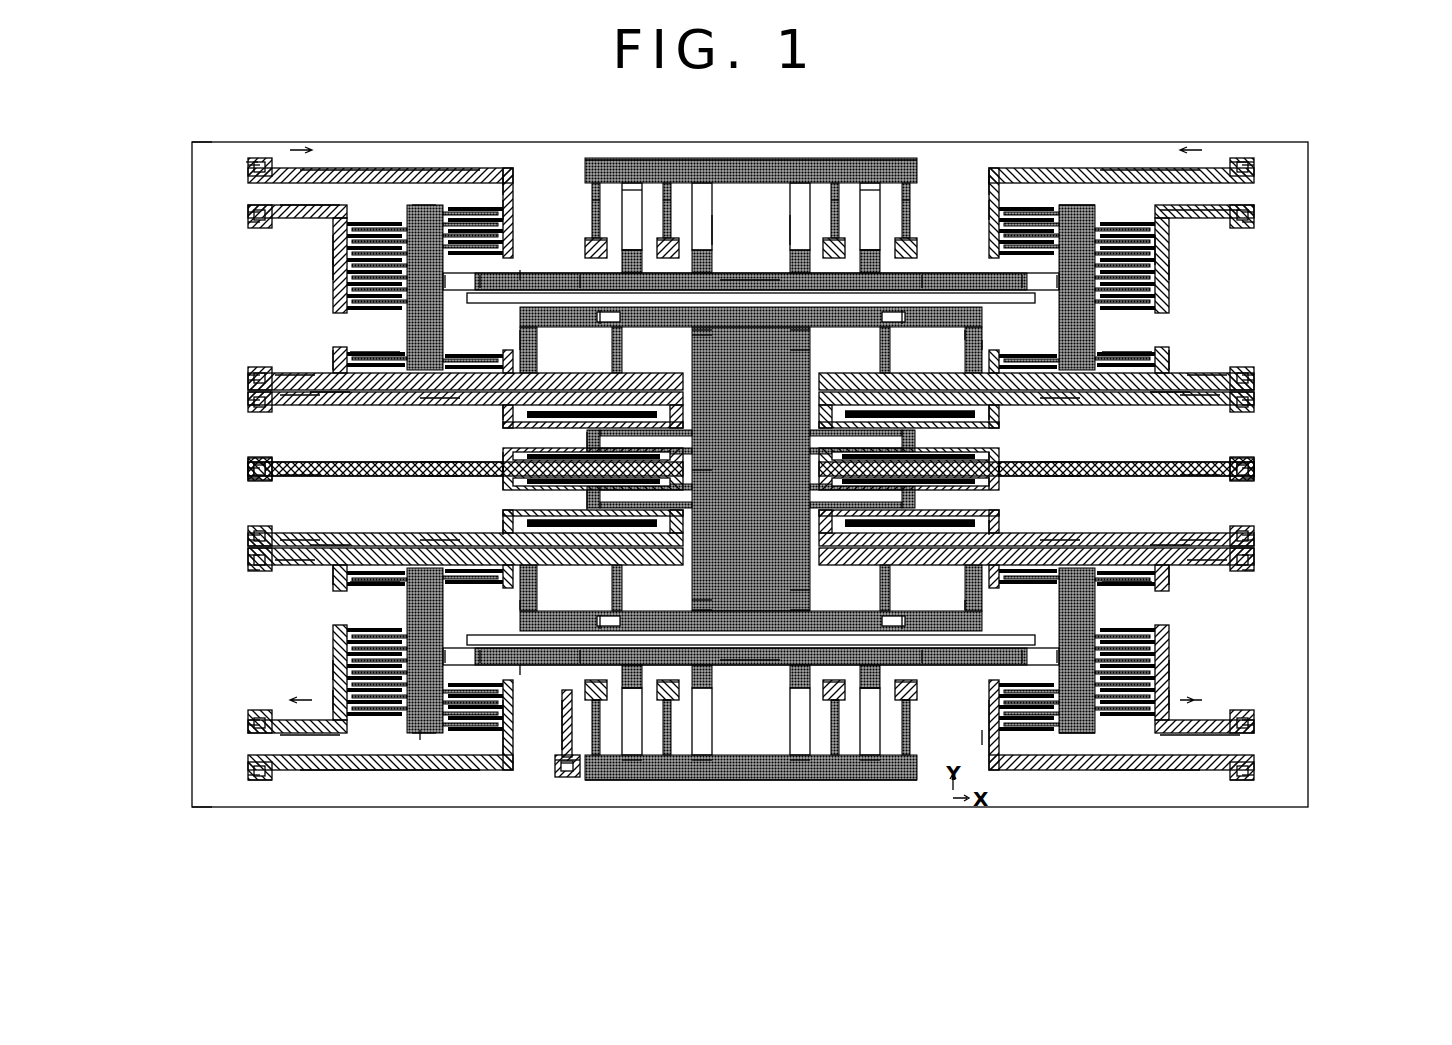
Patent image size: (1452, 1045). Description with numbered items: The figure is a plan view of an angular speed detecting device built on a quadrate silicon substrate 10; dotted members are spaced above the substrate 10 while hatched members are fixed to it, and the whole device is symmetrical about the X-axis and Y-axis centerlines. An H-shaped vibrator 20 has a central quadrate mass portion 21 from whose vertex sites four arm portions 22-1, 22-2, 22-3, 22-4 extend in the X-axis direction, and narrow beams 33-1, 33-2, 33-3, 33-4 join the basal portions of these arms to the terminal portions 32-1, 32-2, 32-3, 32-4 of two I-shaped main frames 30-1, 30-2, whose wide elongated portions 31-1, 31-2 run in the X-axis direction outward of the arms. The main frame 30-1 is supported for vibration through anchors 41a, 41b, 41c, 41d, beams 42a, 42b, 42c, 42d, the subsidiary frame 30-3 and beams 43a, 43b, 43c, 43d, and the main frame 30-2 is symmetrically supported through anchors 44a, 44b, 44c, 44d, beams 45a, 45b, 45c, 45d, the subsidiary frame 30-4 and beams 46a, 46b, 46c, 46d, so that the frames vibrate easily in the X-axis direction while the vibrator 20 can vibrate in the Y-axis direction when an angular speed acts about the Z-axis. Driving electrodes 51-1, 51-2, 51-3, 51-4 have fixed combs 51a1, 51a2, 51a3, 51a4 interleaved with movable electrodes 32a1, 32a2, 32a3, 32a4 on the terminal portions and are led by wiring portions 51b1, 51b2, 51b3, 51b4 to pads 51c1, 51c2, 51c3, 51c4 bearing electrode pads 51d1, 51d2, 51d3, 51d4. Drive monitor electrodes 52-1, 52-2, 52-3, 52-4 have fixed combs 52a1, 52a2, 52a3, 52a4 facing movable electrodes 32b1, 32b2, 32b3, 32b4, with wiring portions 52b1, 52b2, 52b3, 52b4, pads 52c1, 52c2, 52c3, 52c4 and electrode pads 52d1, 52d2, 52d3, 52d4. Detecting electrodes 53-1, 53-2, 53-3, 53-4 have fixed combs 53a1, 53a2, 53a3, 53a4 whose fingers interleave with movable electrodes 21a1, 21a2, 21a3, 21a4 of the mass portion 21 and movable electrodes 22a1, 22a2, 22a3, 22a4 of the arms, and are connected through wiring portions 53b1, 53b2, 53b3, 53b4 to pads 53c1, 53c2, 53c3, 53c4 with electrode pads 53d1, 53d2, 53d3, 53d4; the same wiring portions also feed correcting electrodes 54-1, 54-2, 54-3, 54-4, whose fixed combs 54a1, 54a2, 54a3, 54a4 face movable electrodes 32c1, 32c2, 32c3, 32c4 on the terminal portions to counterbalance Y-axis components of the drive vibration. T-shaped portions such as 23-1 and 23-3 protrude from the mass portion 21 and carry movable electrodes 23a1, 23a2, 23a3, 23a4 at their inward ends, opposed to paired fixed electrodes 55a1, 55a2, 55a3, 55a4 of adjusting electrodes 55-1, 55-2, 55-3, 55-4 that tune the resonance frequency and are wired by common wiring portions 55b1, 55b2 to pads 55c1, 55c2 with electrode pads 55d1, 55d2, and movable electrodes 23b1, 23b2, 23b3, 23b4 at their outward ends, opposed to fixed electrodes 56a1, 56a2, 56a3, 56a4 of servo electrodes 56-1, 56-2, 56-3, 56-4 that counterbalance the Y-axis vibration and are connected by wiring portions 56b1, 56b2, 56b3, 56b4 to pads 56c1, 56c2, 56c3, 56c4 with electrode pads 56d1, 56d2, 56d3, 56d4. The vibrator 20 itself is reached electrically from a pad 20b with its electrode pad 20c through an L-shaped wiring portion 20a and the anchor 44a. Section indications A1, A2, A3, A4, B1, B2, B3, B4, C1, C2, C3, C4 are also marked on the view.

The substrate 10 is at (450, 805).
The vibrator 20 is at (777, 480).
The L-shaped wiring portion 20a is at (575, 770).
The pad 20b is at (560, 775).
The electrode pad 20c is at (568, 778).
The mass portion 21 is at (700, 466).
The comb-like movable electrode 21a1 is at (712, 338).
The comb-like movable electrode 21a2 is at (812, 352).
The comb-like movable electrode 21a3 is at (712, 598).
The comb-like movable electrode 21a4 is at (810, 592).
The arm portion 22-1 is at (515, 298).
The arm portion 22-2 is at (985, 298).
The arm portion 22-3 is at (560, 650).
The arm portion 22-4 is at (938, 650).
The comb-like movable electrode 22a1 is at (603, 298).
The comb-like movable electrode 22a2 is at (905, 298).
The comb-like movable electrode 22a3 is at (623, 650).
The comb-like movable electrode 22a4 is at (880, 650).
The T-shaped portion 23-1 is at (585, 440).
The T-shaped portion 23-3 is at (585, 500).
The paired movable electrode 23a1 is at (660, 456).
The paired movable electrode 23a2 is at (845, 415).
The paired movable electrode 23a3 is at (660, 484).
The paired movable electrode 23a4 is at (845, 484).
The paired movable electrode 23b1 is at (660, 415).
The paired movable electrode 23b2 is at (845, 412).
The paired movable electrode 23b3 is at (660, 524).
The paired movable electrode 23b4 is at (845, 524).
The main frame 30-1 is at (521, 272).
The main frame 30-2 is at (521, 668).
The subsidiary frame 30-3 is at (755, 160).
The subsidiary frame 30-4 is at (757, 782).
The elongated portion 31-1 is at (742, 280).
The elongated portion 31-2 is at (742, 662).
The terminal portion 32-1 is at (520, 342).
The terminal portion 32-2 is at (982, 342).
The terminal portion 32-3 is at (435, 742).
The terminal portion 32-4 is at (983, 742).
The comb-like movable electrode 32a1 is at (420, 205).
The comb-like movable electrode 32a2 is at (1078, 205).
The comb-like movable electrode 32a3 is at (420, 735).
The comb-like movable electrode 32a4 is at (1080, 735).
The comb-like movable electrode 32b1 is at (506, 170).
The comb-like movable electrode 32b2 is at (996, 170).
The comb-like movable electrode 32b3 is at (506, 742).
The comb-like movable electrode 32b4 is at (996, 742).
The comb-like movable electrode 32c1 is at (330, 405).
The comb-like movable electrode 32c2 is at (1170, 405).
The comb-like movable electrode 32c3 is at (332, 545).
The comb-like movable electrode 32c4 is at (1170, 545).
The beam 33-1 is at (462, 298).
The beam 33-2 is at (1048, 298).
The beam 33-3 is at (505, 650).
The beam 33-4 is at (993, 650).
The anchor 41a is at (596, 200).
The anchor 41b is at (666, 200).
The anchor 41c is at (835, 200).
The anchor 41d is at (906, 200).
The beam 42a is at (592, 240).
The beam 42b is at (666, 240).
The beam 42c is at (838, 240).
The beam 42d is at (908, 240).
The beam 43a is at (630, 190).
The beam 43b is at (712, 232).
The beam 43c is at (790, 215).
The beam 43d is at (870, 190).
The anchor 44a is at (598, 705).
The anchor 44b is at (668, 705).
The anchor 44c is at (836, 705).
The anchor 44d is at (906, 705).
The beam 45a is at (596, 700).
The beam 45b is at (668, 700).
The beam 45c is at (836, 700).
The beam 45d is at (908, 700).
The beam 46a is at (632, 768).
The beam 46b is at (705, 768).
The beam 46c is at (800, 768).
The beam 46d is at (870, 768).
The driving electrode 51-1 is at (330, 270).
The driving electrode 51-2 is at (1175, 270).
The driving electrode 51-3 is at (330, 670).
The driving electrode 51-4 is at (1175, 670).
The comb-like fixed electrode 51a1 is at (335, 205).
The comb-like fixed electrode 51a2 is at (1200, 210).
The comb-like fixed electrode 51a3 is at (300, 737).
The comb-like fixed electrode 51a4 is at (1200, 737).
The wiring portion 51b1 is at (333, 250).
The wiring portion 51b2 is at (1170, 240).
The wiring portion 51b3 is at (333, 700).
The wiring portion 51b4 is at (1170, 700).
The pad 51c1 is at (255, 228).
The pad 51c2 is at (1254, 225).
The pad 51c3 is at (255, 720).
The pad 51c4 is at (1254, 720).
The electrode pad 51d1 is at (248, 212).
The electrode pad 51d2 is at (1254, 212).
The electrode pad 51d3 is at (248, 726).
The electrode pad 51d4 is at (1254, 726).
The drive monitor electrode 52-1 is at (518, 210).
The drive monitor electrode 52-2 is at (984, 210).
The drive monitor electrode 52-3 is at (520, 742).
The drive monitor electrode 52-4 is at (986, 730).
The comb-like fixed electrode 52a1 is at (507, 175).
The comb-like fixed electrode 52a2 is at (995, 175).
The comb-like fixed electrode 52a3 is at (506, 700).
The comb-like fixed electrode 52a4 is at (995, 705).
The wiring portion 52b1 is at (385, 170).
The wiring portion 52b2 is at (1150, 170).
The wiring portion 52b3 is at (380, 772).
The wiring portion 52b4 is at (1120, 772).
The pad 52c1 is at (252, 162).
The pad 52c2 is at (1245, 162).
The pad 52c3 is at (256, 782).
The pad 52c4 is at (1245, 782).
The electrode pad 52d1 is at (248, 165).
The electrode pad 52d2 is at (1254, 165).
The electrode pad 52d3 is at (248, 775).
The electrode pad 52d4 is at (1254, 775).
The detecting electrode 53-1 is at (605, 345).
The detecting electrode 53-2 is at (895, 345).
The detecting electrode 53-3 is at (605, 600).
The detecting electrode 53-4 is at (895, 600).
The comb-like fixed electrode 53a1 is at (700, 340).
The comb-like fixed electrode 53a2 is at (800, 340).
The comb-like fixed electrode 53a3 is at (703, 612).
The comb-like fixed electrode 53a4 is at (790, 612).
The wiring portion 53b1 is at (290, 375).
The wiring portion 53b2 is at (1215, 375).
The wiring portion 53b3 is at (290, 565).
The wiring portion 53b4 is at (1215, 565).
The pad 53c1 is at (255, 370).
The pad 53c2 is at (1250, 370).
The pad 53c3 is at (255, 572).
The pad 53c4 is at (1250, 572).
The electrode pad 53d1 is at (248, 380).
The electrode pad 53d2 is at (1254, 380).
The electrode pad 53d3 is at (248, 556).
The electrode pad 53d4 is at (1254, 556).
The correcting electrode 54-1 is at (330, 355).
The correcting electrode 54-2 is at (1172, 355).
The correcting electrode 54-3 is at (330, 585).
The correcting electrode 54-4 is at (1172, 585).
The comb-like fixed electrode 54a1 is at (372, 350).
The comb-like fixed electrode 54a2 is at (1130, 350).
The comb-like fixed electrode 54a3 is at (372, 588).
The comb-like fixed electrode 54a4 is at (1130, 588).
The adjusting electrode 55-1 is at (440, 462).
The adjusting electrode 55-2 is at (1060, 462).
The adjusting electrode 55-3 is at (440, 477).
The adjusting electrode 55-4 is at (1060, 477).
The paired fixed electrode 55a1 is at (505, 455).
The paired fixed electrode 55a2 is at (997, 455).
The paired fixed electrode 55a3 is at (505, 485).
The paired fixed electrode 55a4 is at (997, 485).
The common wiring portion 55b1 is at (300, 477).
The common wiring portion 55b2 is at (1200, 477).
The pad 55c1 is at (255, 480).
The pad 55c2 is at (1250, 480).
The electrode pad 55d1 is at (248, 468).
The electrode pad 55d2 is at (1254, 468).
The servo electrode 56-1 is at (440, 398).
The servo electrode 56-2 is at (1060, 398).
The servo electrode 56-3 is at (440, 540).
The servo electrode 56-4 is at (1060, 540).
The paired fixed electrode 56a1 is at (505, 410).
The paired fixed electrode 56a2 is at (997, 410).
The paired fixed electrode 56a3 is at (505, 530).
The paired fixed electrode 56a4 is at (997, 530).
The wiring portion 56b1 is at (300, 405).
The wiring portion 56b2 is at (1200, 405).
The wiring portion 56b3 is at (300, 533).
The wiring portion 56b4 is at (1200, 533).
The pad 56c1 is at (255, 410).
The pad 56c2 is at (1250, 408).
The pad 56c3 is at (255, 535).
The pad 56c4 is at (1250, 535).
The electrode pad 56d1 is at (248, 400).
The electrode pad 56d2 is at (1254, 400).
The electrode pad 56d3 is at (248, 540).
The electrode pad 56d4 is at (1254, 540).
The section line A1 is at (305, 235).
The section line A2 is at (1187, 235).
The section line A3 is at (297, 786).
The section line A4 is at (1187, 786).
The section line B1 is at (547, 350).
The section line B2 is at (968, 350).
The section line B3 is at (581, 680).
The section line B4 is at (919, 680).
The section line C1 is at (721, 213).
The section line C2 is at (928, 213).
The section line C3 is at (733, 739).
The section line C4 is at (938, 739).